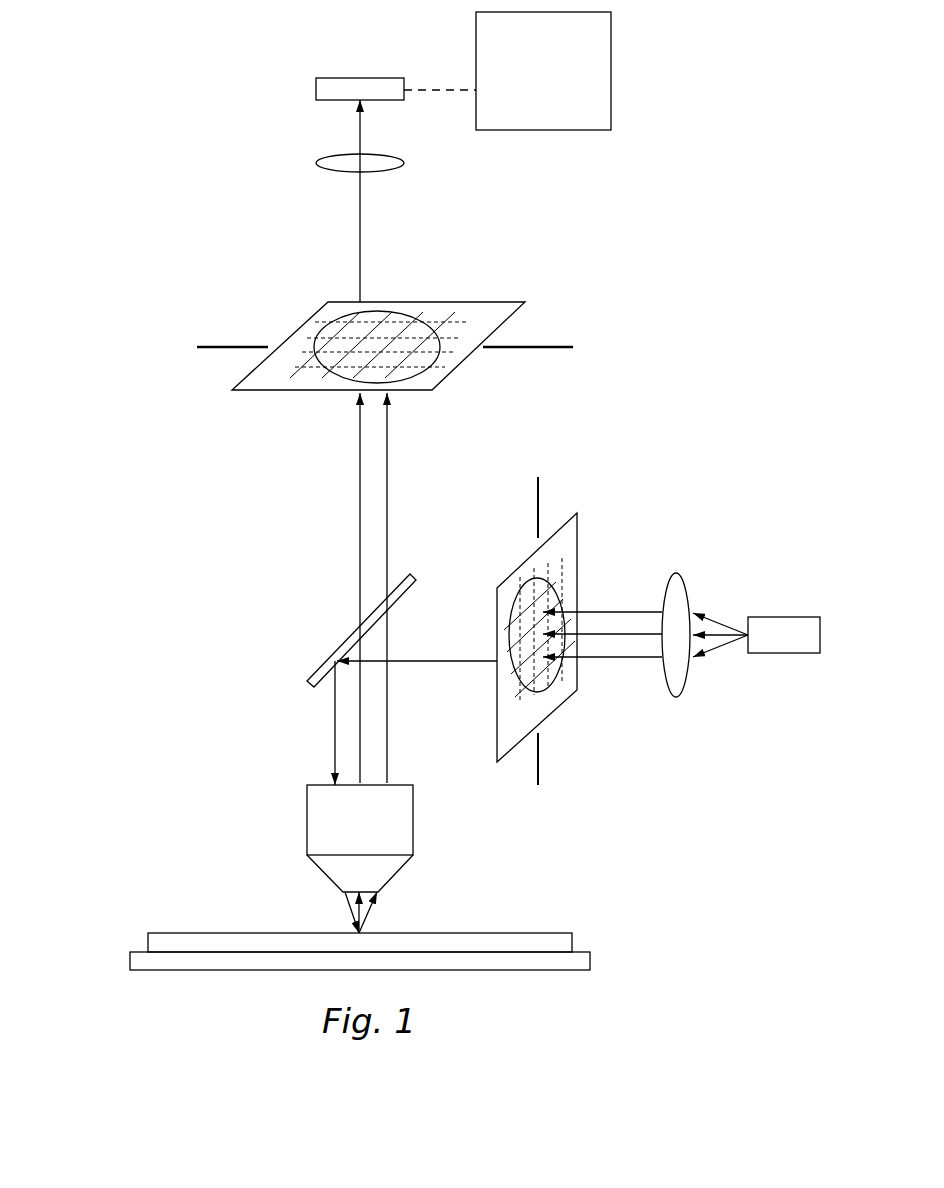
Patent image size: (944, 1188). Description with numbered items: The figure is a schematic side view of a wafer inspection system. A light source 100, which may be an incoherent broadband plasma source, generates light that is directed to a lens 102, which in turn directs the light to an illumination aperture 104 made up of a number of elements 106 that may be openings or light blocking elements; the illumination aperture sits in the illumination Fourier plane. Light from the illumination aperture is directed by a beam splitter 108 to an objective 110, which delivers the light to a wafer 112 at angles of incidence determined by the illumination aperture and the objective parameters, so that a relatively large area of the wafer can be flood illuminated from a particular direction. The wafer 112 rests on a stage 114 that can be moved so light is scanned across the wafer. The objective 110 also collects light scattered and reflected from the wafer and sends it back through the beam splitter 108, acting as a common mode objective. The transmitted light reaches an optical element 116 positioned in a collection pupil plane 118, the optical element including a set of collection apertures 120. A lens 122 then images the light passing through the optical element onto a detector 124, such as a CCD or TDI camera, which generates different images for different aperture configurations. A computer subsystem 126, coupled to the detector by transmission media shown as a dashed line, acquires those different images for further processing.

The light source 100 is at (787, 617).
The lens 102 is at (680, 688).
The illumination aperture 104 is at (575, 547).
The elements 106 is at (552, 604).
The beam splitter 108 is at (320, 664).
The objective 110 is at (307, 823).
The wafer 112 is at (563, 933).
The stage 114 is at (138, 952).
The optical element 116 is at (335, 302).
The collection pupil plane 118 is at (555, 349).
The apertures 120 is at (418, 330).
The lens 122 is at (328, 155).
The detector 124 is at (316, 82).
The computer subsystem 126 is at (543, 71).